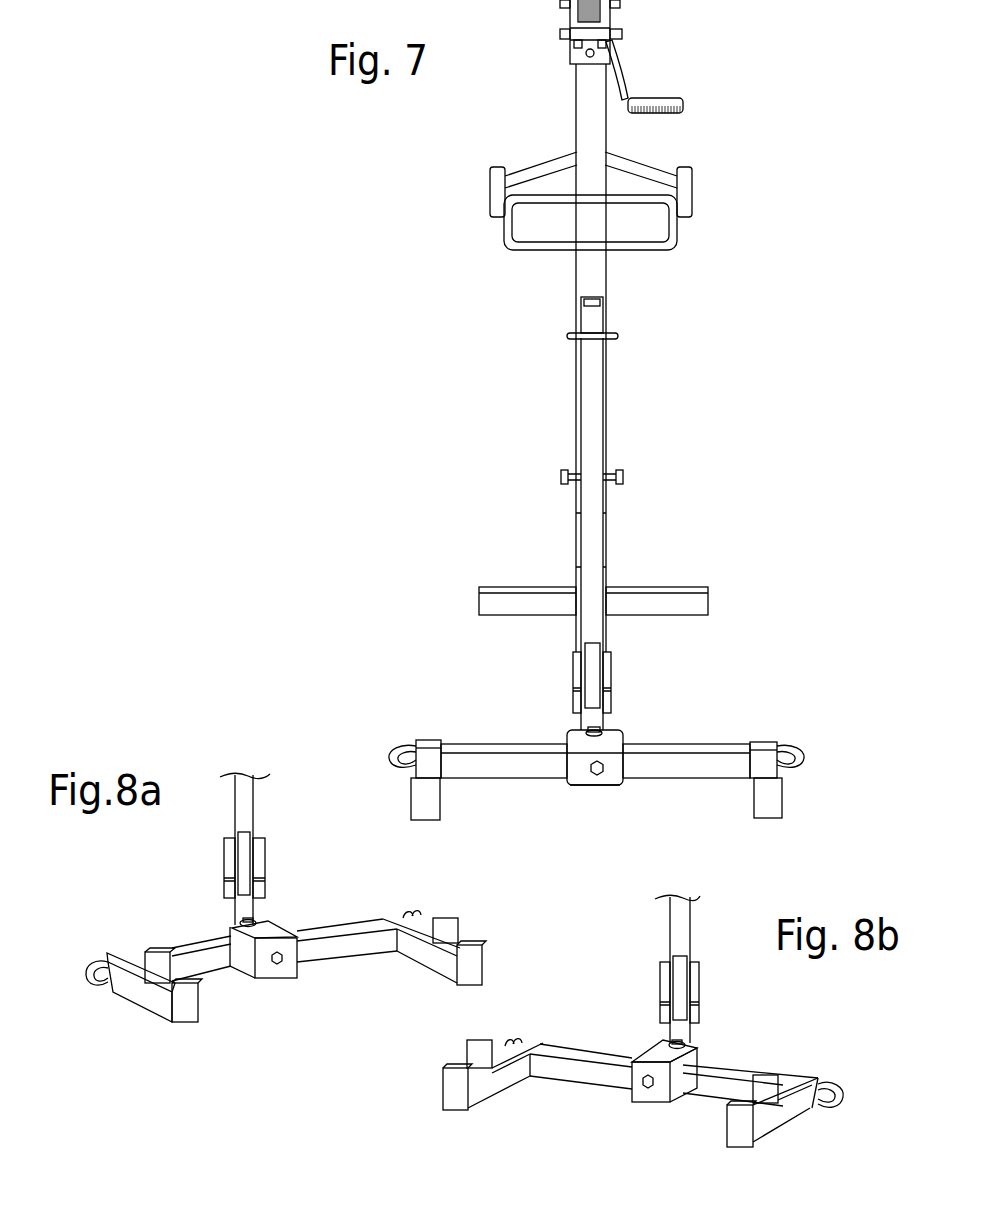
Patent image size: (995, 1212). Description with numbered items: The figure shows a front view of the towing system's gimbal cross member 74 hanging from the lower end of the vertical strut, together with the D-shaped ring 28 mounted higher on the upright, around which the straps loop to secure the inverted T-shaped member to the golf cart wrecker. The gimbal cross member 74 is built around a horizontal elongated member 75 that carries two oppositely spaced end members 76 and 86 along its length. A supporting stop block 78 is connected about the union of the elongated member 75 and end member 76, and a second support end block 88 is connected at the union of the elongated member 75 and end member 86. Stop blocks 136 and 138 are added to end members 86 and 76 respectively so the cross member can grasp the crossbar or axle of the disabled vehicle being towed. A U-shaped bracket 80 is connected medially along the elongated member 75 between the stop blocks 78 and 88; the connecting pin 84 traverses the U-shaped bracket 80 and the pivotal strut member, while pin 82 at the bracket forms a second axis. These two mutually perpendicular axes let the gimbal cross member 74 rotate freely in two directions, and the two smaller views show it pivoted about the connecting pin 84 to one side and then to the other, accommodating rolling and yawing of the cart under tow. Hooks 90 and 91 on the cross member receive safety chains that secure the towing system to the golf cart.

In FIG. 7, the D-shaped ring 28 is at (677, 248).
In FIG. 7, the gimbal cross member 74 is at (721, 683).
In FIG. 8a, the gimbal cross member 74 is at (428, 910).
In FIG. 8b, the gimbal cross member 74 is at (796, 1025).
In FIG. 7, the elongated member 75 is at (715, 773).
In FIG. 8b, the end member 76 is at (772, 1122).
In FIG. 7, the supporting stop block 78 is at (765, 742).
In FIG. 8b, the supporting stop block 78 is at (805, 1078).
In FIG. 7, the U-shaped bracket 80 is at (622, 786).
In FIG. 7, the pin 82 is at (596, 775).
In FIG. 7, the connecting pin 84 is at (607, 733).
In FIG. 7, the end member 86 is at (441, 780).
In FIG. 7, the second support end block 88 is at (422, 758).
In FIG. 8a, the second support end block 88 is at (128, 958).
In FIG. 7, the hook 90 is at (392, 760).
In FIG. 7, the hook 91 is at (803, 765).
In FIG. 8a, the stop block 136 is at (193, 1003).
In FIG. 8a, the stop block 138 is at (475, 965).